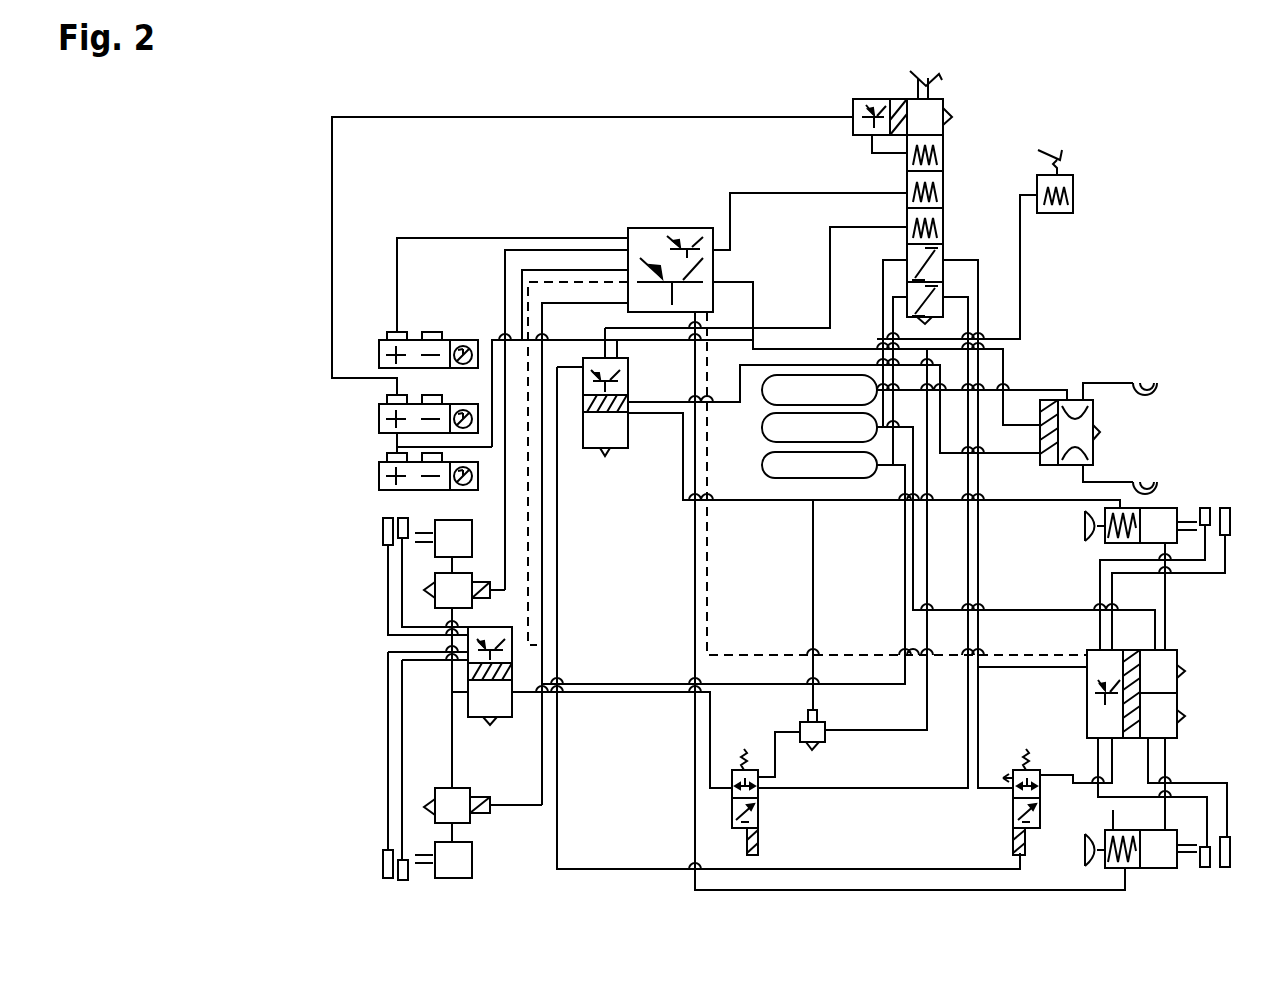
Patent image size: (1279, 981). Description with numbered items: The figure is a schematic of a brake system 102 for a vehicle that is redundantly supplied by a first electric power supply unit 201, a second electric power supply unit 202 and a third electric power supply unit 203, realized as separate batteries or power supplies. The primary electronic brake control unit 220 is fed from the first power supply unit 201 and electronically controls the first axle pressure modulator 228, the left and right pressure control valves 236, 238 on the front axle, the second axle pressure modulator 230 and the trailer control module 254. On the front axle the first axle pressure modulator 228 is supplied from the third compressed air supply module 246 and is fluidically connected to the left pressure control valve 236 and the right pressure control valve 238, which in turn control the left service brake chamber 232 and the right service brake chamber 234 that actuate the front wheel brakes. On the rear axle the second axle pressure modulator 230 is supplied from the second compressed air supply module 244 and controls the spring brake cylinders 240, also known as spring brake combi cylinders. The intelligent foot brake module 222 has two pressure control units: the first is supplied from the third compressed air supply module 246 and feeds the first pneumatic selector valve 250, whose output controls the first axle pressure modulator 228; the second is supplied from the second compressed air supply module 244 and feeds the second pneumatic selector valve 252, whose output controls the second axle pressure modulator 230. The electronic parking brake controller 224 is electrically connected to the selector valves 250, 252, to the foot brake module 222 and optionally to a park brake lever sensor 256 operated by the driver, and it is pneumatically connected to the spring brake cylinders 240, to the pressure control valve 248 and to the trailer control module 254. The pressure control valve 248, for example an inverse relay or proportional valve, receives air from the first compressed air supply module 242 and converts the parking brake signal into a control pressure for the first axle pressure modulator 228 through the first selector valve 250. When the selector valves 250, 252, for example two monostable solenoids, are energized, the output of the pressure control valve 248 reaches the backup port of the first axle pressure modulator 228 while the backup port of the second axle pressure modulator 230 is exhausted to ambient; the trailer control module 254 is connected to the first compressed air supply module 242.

The brake system 102 is at (338, 88).
The first electric power supply unit 201 is at (430, 330).
The second electric power supply unit 202 is at (378, 412).
The third electric power supply unit 203 is at (378, 467).
The electronic brake control unit 220 is at (662, 228).
The intelligent foot brake module 222 is at (943, 103).
The electronic parking brake controller 224 is at (590, 452).
The first axle pressure modulator 228 is at (503, 725).
The second axle pressure modulator 230 is at (1177, 660).
The left service brake chamber 232 is at (450, 520).
The right service brake chamber 234 is at (452, 878).
The left pressure control valve 236 is at (434, 590).
The right pressure control valve 238 is at (470, 820).
The spring brake cylinders 240 is at (1170, 507).
The first compressed air supply module 242 is at (762, 390).
The second compressed air supply module 244 is at (790, 443).
The third compressed air supply module 246 is at (848, 480).
The pressure control valve 248 is at (825, 738).
The first pneumatic selector valve 250 is at (758, 815).
The second pneumatic selector valve 252 is at (1013, 810).
The trailer control module 254 is at (1097, 455).
The park brake lever sensor 256 is at (1073, 198).